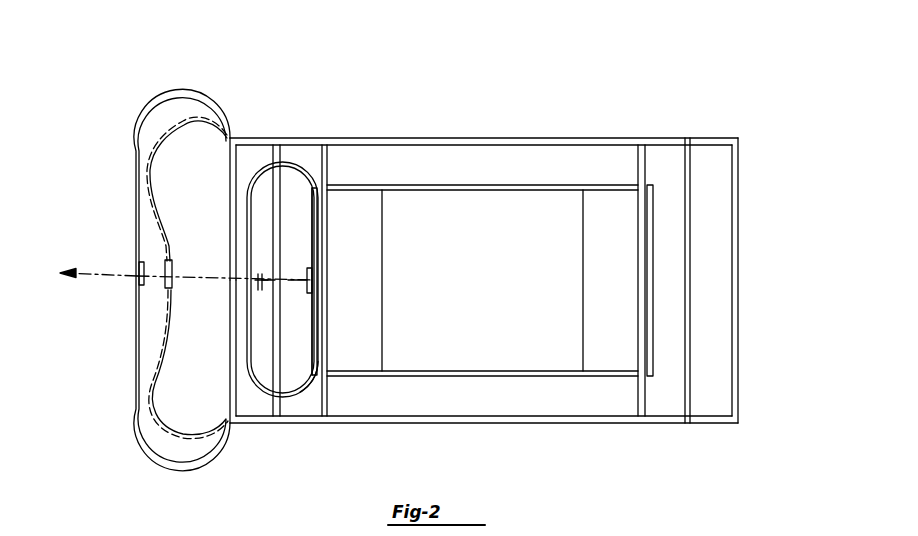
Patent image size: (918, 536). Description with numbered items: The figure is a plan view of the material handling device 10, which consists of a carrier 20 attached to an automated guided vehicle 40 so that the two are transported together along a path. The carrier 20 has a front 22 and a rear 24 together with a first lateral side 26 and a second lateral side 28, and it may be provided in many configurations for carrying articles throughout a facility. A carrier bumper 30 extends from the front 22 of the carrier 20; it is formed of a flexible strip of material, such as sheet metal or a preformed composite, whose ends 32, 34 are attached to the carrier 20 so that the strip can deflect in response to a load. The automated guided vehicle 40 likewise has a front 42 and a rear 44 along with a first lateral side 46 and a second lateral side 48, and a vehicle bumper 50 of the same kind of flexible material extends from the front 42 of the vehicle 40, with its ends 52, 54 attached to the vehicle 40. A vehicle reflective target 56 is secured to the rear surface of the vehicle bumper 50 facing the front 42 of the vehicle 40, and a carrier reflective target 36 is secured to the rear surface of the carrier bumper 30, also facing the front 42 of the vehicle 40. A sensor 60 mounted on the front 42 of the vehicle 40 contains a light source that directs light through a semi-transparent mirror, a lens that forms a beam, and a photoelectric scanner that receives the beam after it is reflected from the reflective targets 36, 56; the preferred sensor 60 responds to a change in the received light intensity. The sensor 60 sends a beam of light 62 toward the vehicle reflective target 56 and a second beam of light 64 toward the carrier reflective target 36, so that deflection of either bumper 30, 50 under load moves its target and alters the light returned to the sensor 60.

The material handling device 10 is at (728, 70).
The carrier 20 is at (691, 236).
The front of the carrier 22 is at (229, 162).
The rear of the carrier 24 is at (742, 288).
The first lateral side of the carrier 26 is at (715, 423).
The second lateral side of the carrier 28 is at (717, 137).
The carrier bumper 30 is at (136, 326).
The end of the carrier bumper 32 is at (231, 138).
The end of the carrier bumper 34 is at (230, 423).
The carrier reflective target 36 is at (151, 265).
The automated guided vehicle 40 is at (495, 283).
The front of the vehicle 42 is at (311, 208).
The rear of the vehicle 44 is at (652, 351).
The first lateral side of the vehicle 46 is at (492, 376).
The second lateral side of the vehicle 48 is at (492, 184).
The vehicle bumper 50 is at (292, 158).
The end of the vehicle bumper 52 is at (316, 186).
The end of the vehicle bumper 54 is at (318, 386).
The vehicle reflective target 56 is at (258, 271).
The sensor 60 is at (305, 270).
The beam of light 62 is at (263, 284).
The second beam of light 64 is at (189, 279).